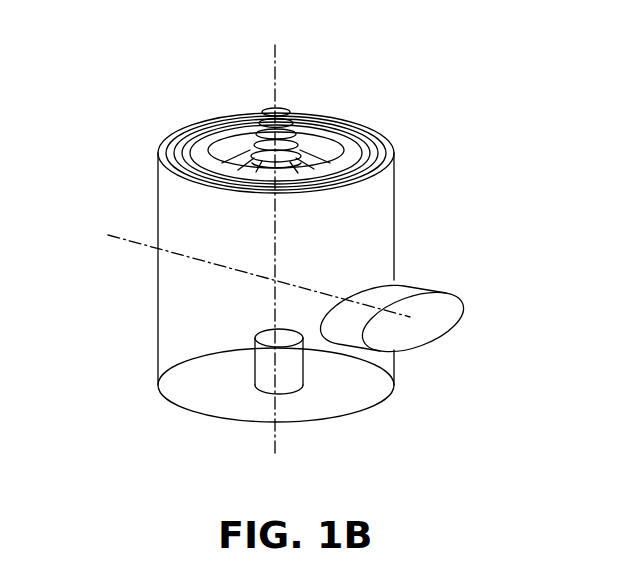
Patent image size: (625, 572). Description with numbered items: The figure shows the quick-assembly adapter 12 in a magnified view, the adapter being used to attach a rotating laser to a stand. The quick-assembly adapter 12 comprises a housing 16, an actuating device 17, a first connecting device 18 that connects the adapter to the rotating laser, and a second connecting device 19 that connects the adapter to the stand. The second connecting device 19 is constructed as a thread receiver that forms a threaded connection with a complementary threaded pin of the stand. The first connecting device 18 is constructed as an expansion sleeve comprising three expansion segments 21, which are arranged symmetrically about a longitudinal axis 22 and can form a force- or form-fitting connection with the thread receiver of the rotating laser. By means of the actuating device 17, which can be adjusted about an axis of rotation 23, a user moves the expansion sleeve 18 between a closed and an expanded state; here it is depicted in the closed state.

The quick-assembly adapter 12 is at (432, 80).
The housing 16 is at (158, 304).
The actuating device 17 is at (432, 272).
The first connecting device 18 is at (280, 108).
The second connecting device 19 is at (280, 392).
The expansion segments 21 is at (262, 140).
The longitudinal axis 22 is at (276, 238).
The axis of rotation 23 is at (203, 262).